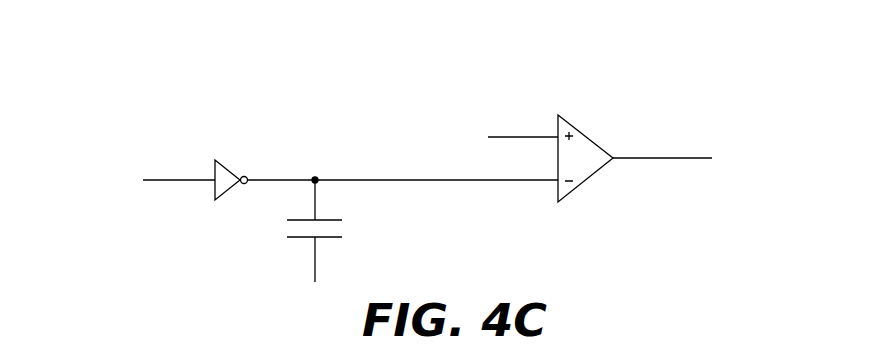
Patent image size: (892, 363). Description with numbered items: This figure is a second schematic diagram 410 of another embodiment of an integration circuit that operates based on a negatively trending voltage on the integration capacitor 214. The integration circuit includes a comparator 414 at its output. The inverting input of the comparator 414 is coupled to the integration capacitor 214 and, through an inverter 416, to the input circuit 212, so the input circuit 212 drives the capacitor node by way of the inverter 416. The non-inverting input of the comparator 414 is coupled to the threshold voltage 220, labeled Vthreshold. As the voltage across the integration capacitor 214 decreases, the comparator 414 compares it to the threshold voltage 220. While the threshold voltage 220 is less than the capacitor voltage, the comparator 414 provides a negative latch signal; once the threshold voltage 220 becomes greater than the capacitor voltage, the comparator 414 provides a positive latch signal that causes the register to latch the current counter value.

The input circuit 212 is at (113, 152).
The inverter 416 is at (215, 187).
The integration capacitor 214 is at (338, 222).
The threshold voltage 220 is at (390, 125).
The second schematic diagram 410 is at (628, 98).
The comparator 414 is at (587, 183).